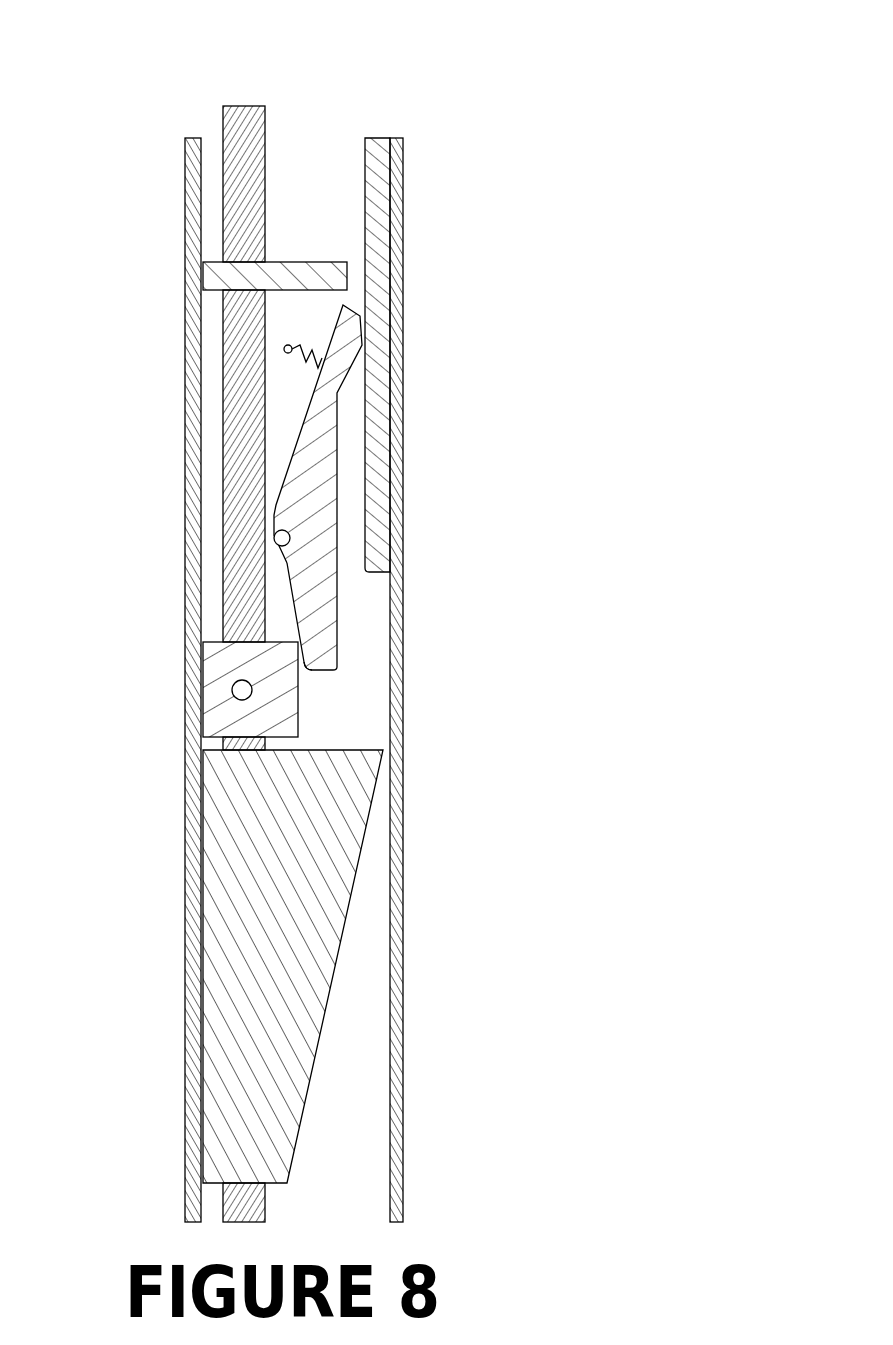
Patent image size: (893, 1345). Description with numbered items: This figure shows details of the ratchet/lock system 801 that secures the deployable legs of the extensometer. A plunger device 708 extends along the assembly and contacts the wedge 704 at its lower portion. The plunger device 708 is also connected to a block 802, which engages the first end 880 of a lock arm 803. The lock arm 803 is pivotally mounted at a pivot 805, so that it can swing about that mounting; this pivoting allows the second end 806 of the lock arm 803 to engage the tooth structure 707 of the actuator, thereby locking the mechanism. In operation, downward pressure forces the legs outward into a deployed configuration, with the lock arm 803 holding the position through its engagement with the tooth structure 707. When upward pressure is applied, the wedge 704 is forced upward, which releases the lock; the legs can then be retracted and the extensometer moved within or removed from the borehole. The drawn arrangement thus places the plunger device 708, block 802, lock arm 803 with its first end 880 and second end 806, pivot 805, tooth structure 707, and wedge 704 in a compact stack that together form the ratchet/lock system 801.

The ratchet/lock system 801 is at (285, 52).
The tooth structure 707 is at (378, 138).
The plunger device 708 is at (222, 120).
The second end 806 is at (346, 304).
The pivot mounting 805 is at (272, 530).
The lock arm 803 is at (337, 600).
The block 802 is at (213, 672).
The first end 880 is at (307, 670).
The wedge 704 is at (368, 828).